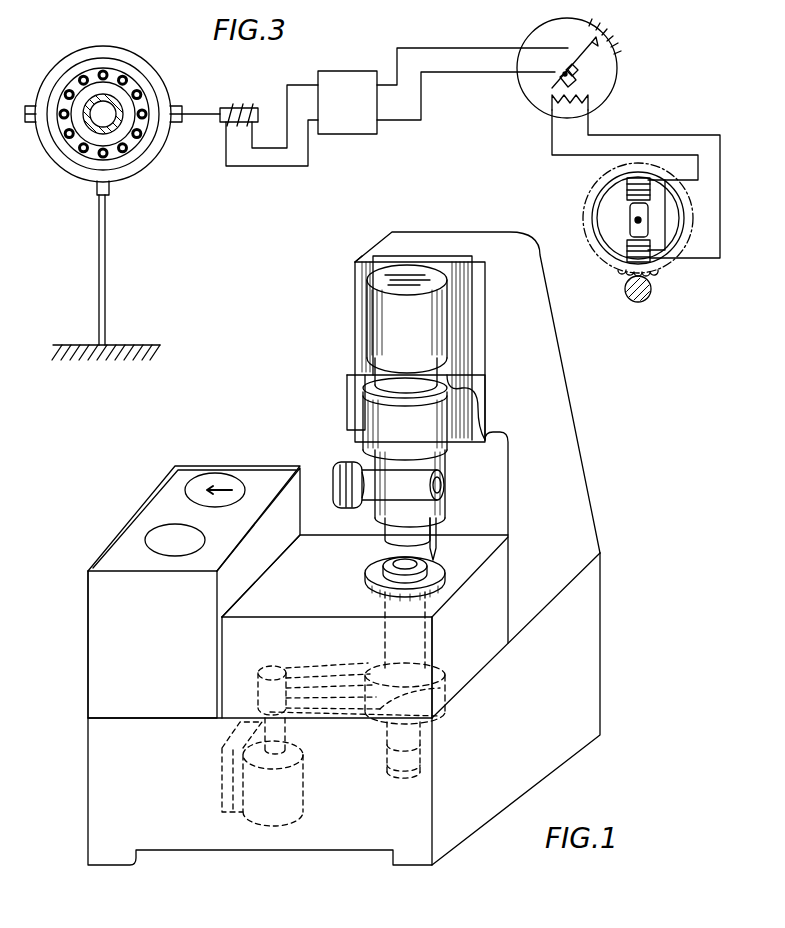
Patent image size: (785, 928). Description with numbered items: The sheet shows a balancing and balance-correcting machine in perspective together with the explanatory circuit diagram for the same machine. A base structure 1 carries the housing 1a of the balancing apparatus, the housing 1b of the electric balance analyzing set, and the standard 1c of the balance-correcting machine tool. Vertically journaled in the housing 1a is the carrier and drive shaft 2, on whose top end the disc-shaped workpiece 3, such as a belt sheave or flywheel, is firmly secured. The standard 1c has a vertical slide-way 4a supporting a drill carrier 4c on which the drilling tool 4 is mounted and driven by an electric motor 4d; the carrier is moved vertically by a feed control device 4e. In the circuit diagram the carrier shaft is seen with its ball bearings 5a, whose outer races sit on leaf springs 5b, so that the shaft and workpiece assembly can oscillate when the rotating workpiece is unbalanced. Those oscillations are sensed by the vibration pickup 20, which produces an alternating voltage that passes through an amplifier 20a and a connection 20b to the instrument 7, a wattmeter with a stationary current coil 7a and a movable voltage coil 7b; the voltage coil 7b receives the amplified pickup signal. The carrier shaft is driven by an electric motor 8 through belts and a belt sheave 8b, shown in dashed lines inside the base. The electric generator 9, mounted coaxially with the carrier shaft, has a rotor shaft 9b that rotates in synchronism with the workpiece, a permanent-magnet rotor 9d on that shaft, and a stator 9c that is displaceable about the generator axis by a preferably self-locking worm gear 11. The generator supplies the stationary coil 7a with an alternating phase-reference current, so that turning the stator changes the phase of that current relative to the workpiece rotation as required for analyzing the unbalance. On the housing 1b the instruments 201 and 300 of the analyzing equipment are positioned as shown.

In FIG. 1, the base structure 1 is at (327, 548).
In FIG. 1, the housing of the balancing apparatus 1a is at (500, 597).
In FIG. 1, the housing of the electric balance analyzing set 1b is at (174, 580).
In FIG. 1, the standard of the balance-correcting machine tool 1c is at (570, 378).
In FIG. 3, the carrier and drive shaft 2 is at (118, 100).
In FIG. 1, the carrier and drive shaft 2 is at (418, 636).
In FIG. 1, the workpiece 3 is at (426, 568).
In FIG. 1, the drilling tool 4 is at (428, 412).
In FIG. 1, the vertical slide-way 4a is at (480, 316).
In FIG. 1, the drill carrier 4c is at (440, 522).
In FIG. 1, the electric motor 4d is at (375, 311).
In FIG. 1, the feed control device 4e is at (345, 470).
In FIG. 3, the ball bearings 5a is at (72, 80).
In FIG. 3, the leaf springs 5b is at (100, 252).
In FIG. 3, the instrument 7 is at (578, 68).
In FIG. 1, the instrument 7 is at (165, 525).
In FIG. 3, the stationary current coil 7a is at (590, 95).
In FIG. 3, the movable voltage coil 7b is at (574, 67).
In FIG. 1, the instrument 300 is at (132, 530).
In FIG. 1, the electric motor 8 is at (298, 796).
In FIG. 1, the belt sheave 8b is at (444, 690).
In FIG. 3, the electric generator 9 is at (636, 194).
In FIG. 1, the electric generator 9 is at (425, 757).
In FIG. 3, the rotor shaft 9b is at (628, 226).
In FIG. 3, the stator 9c is at (592, 198).
In FIG. 3, the rotor 9d is at (634, 220).
In FIG. 3, the worm gear 11 is at (652, 290).
In FIG. 3, the vibration pickup 20 is at (236, 108).
In FIG. 3, the amplifier 20a is at (364, 74).
In FIG. 3, the output line 20b is at (480, 72).
In FIG. 1, the instrument 201 is at (222, 460).